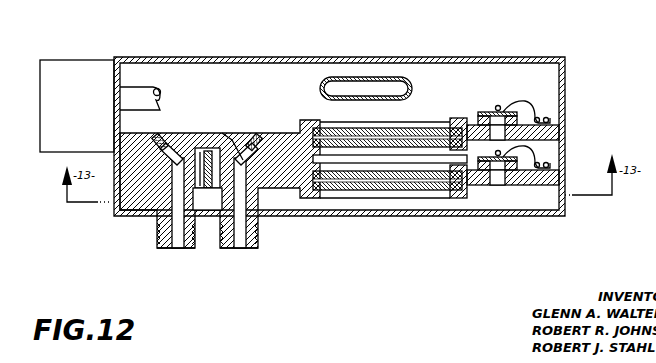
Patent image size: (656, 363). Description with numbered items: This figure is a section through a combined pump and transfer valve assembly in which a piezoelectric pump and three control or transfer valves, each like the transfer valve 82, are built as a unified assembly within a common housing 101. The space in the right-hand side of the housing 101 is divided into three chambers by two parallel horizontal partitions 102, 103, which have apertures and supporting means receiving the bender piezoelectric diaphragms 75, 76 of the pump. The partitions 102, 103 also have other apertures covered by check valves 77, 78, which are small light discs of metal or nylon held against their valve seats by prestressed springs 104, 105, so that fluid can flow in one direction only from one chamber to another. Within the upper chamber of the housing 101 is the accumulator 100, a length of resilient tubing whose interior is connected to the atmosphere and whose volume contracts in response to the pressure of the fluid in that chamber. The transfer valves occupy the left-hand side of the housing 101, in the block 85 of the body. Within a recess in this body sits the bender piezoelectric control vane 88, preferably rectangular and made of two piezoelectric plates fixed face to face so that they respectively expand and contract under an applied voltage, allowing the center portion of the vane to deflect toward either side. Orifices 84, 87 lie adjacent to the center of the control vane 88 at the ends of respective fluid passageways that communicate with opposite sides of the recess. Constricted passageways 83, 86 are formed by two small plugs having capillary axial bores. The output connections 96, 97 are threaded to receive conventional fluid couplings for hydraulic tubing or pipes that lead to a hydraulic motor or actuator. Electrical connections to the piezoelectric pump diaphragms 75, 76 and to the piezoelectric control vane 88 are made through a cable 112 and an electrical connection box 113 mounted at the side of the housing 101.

The housing 101 is at (482, 58).
The electrical connection box 113 is at (99, 48).
The cable 112 is at (143, 88).
The accumulator 100 is at (355, 77).
The body block 85 is at (297, 200).
The output connection 97 is at (167, 249).
The output connection 96 is at (253, 249).
The constricted passageway 86 is at (160, 136).
The constricted passageway 83 is at (256, 136).
The orifice 84 is at (230, 140).
The bender piezoelectric control vane 88 is at (212, 148).
The orifice 87 is at (200, 153).
The transfer valve 82 is at (207, 199).
The bender piezoelectric diaphragm 75 is at (415, 127).
The bender piezoelectric diaphragm 76 is at (400, 191).
The check valve 77 is at (497, 191).
The partition 102 is at (550, 137).
The prestressed spring 104 is at (548, 170).
The check valve 78 is at (478, 112).
The prestressed spring 105 is at (518, 108).
The partition 103 is at (540, 191).